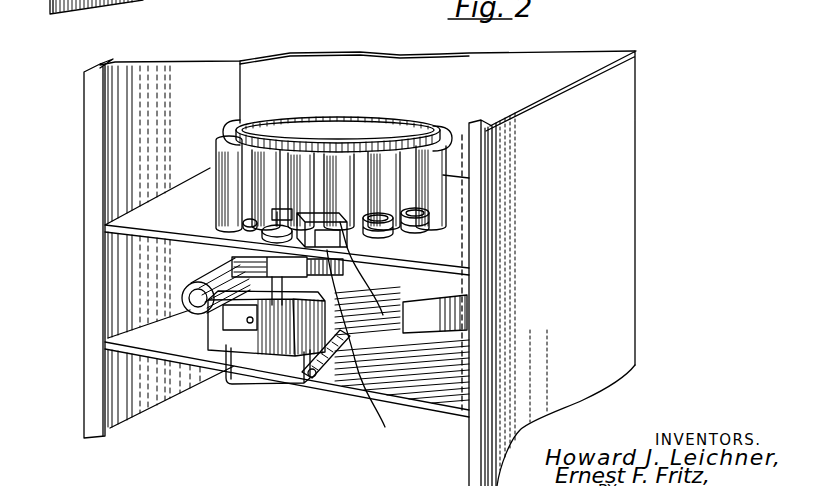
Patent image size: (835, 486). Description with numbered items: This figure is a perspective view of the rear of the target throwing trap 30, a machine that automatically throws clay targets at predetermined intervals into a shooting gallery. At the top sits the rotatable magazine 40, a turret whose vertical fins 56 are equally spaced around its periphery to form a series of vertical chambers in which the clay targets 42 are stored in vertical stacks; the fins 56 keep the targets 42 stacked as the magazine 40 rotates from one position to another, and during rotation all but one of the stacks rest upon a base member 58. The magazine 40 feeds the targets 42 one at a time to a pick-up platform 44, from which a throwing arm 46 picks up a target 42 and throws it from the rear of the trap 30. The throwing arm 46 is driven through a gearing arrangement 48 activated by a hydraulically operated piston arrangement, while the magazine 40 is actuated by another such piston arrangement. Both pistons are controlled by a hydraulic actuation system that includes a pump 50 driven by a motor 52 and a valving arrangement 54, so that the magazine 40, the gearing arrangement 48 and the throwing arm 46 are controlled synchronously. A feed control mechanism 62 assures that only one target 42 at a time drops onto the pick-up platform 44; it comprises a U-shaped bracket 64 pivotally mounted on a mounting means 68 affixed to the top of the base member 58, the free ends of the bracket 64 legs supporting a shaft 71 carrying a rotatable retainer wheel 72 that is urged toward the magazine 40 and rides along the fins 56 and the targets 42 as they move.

The target throwing trap 30 is at (636, 159).
The rotatable magazine 40 is at (407, 117).
The clay targets 42 is at (410, 240).
The pick-up platform 44 is at (366, 349).
The throwing arm 46 is at (230, 258).
The gearing arrangement 48 is at (263, 357).
The pump 50 is at (213, 268).
The motor 52 is at (190, 313).
The valving arrangement 54 is at (444, 325).
The vertical fins 56 is at (348, 148).
The base member 58 is at (460, 267).
The feed control mechanism 62 is at (369, 279).
The U-shaped bracket 64 is at (333, 217).
The mounting means 68 is at (280, 210).
The shaft 71 is at (276, 214).
The retainer wheel 72 is at (262, 230).